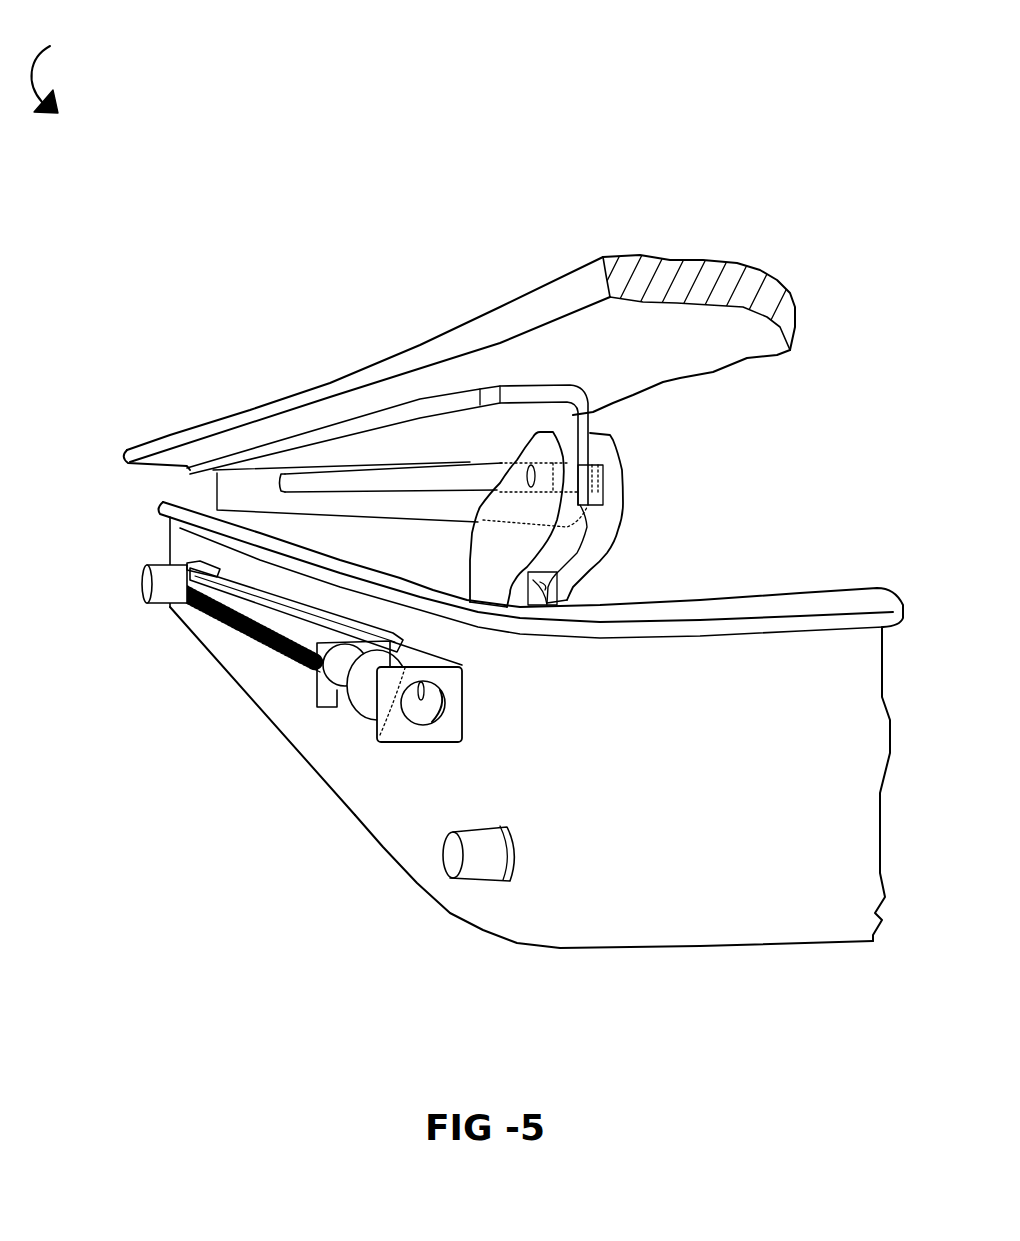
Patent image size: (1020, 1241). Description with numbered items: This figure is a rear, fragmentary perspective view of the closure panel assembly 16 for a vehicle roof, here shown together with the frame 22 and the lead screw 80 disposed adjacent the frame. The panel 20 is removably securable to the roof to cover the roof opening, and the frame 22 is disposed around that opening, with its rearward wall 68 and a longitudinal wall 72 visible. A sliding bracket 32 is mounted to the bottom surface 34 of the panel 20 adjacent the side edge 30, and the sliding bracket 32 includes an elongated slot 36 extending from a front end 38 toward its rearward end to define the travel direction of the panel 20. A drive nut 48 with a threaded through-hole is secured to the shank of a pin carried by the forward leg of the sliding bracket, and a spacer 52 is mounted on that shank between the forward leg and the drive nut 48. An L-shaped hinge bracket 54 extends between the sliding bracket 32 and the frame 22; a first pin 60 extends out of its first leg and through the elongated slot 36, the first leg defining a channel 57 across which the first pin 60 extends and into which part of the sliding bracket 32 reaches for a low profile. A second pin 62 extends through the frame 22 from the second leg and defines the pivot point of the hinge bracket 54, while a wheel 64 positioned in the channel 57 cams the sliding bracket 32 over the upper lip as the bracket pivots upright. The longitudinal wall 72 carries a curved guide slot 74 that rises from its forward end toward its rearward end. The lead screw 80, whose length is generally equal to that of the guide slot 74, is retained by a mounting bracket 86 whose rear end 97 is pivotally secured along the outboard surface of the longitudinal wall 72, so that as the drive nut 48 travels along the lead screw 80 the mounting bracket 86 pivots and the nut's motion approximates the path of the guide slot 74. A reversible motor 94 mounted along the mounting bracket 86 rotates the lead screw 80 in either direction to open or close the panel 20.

The closure panel assembly 16 is at (55, 57).
The panel 20 is at (123, 452).
The frame 22 is at (468, 928).
The side edge 30 is at (503, 300).
The sliding bracket 32 is at (400, 412).
The bottom surface 34 is at (625, 355).
The elongated slot 36 is at (407, 487).
The front end 38 is at (295, 482).
The drive nut 48 is at (143, 587).
The spacer 52 is at (185, 563).
The L-shaped hinge bracket 54 is at (615, 543).
The channel 57 is at (560, 585).
The first pin 60 is at (486, 477).
The second pin 62 is at (443, 870).
The wheel 64 is at (575, 592).
The rearward wall 68 is at (847, 941).
The longitudinal wall 72 is at (200, 650).
The guide slot 74 is at (290, 596).
The lead screw 80 is at (267, 640).
The mounting bracket 86 is at (405, 743).
The reversible motor 94 is at (330, 710).
The rear end 97 is at (322, 645).